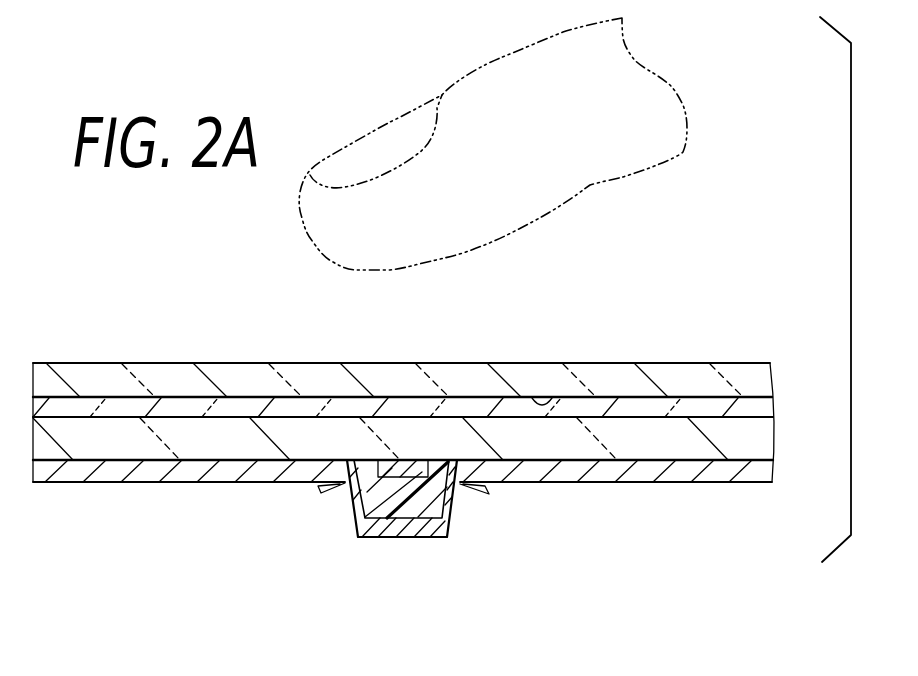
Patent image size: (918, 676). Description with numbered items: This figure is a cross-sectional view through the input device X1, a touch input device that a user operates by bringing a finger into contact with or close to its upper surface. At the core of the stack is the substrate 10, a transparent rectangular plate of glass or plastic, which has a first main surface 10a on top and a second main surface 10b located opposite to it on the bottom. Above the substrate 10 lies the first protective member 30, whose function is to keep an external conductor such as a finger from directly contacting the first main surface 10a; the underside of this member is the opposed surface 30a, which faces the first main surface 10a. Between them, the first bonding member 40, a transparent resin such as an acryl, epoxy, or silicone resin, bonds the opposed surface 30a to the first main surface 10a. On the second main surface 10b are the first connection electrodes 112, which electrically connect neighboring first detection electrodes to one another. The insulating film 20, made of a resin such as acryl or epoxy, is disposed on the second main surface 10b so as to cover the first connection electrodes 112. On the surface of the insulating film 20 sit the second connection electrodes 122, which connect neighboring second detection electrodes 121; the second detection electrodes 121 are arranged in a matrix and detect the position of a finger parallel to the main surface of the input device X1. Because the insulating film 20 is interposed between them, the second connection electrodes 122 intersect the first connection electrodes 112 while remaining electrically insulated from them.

The substrate 10 is at (762, 440).
The first main surface 10a is at (699, 413).
The second main surface 10b is at (675, 463).
The insulating film 20 is at (410, 508).
The first protective member 30 is at (755, 381).
The opposed surface 30a is at (533, 396).
The first bonding member 40 is at (757, 408).
The first connection electrode 112 is at (403, 468).
The second detection electrode 121 is at (145, 477).
The second connection electrode 122 is at (352, 518).
The input device X1 is at (638, 281).